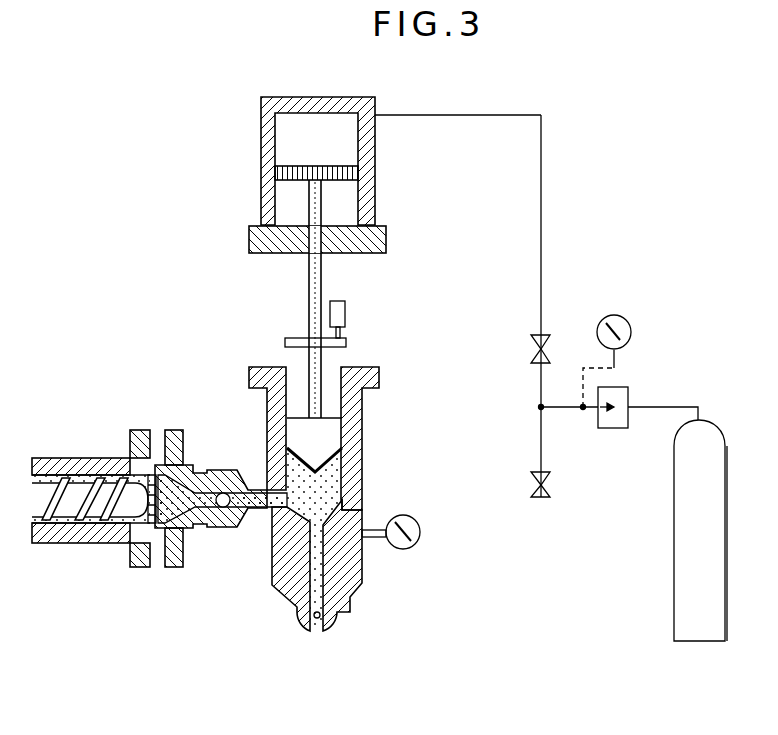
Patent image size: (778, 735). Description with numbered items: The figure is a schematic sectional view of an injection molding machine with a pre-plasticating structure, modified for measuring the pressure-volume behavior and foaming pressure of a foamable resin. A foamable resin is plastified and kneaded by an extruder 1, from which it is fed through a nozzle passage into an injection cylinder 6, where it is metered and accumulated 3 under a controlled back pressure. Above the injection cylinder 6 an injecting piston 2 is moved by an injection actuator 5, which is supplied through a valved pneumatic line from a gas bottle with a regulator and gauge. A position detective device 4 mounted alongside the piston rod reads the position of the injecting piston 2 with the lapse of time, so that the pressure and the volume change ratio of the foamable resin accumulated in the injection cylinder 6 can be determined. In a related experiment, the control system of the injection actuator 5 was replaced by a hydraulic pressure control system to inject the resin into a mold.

The extruder 1 is at (103, 451).
The injecting piston 2 is at (325, 440).
The metering and accumulating portion 3 is at (268, 537).
The position detective device 4 is at (337, 318).
The injection actuator 5 is at (365, 160).
The injection cylinder 6 is at (352, 472).